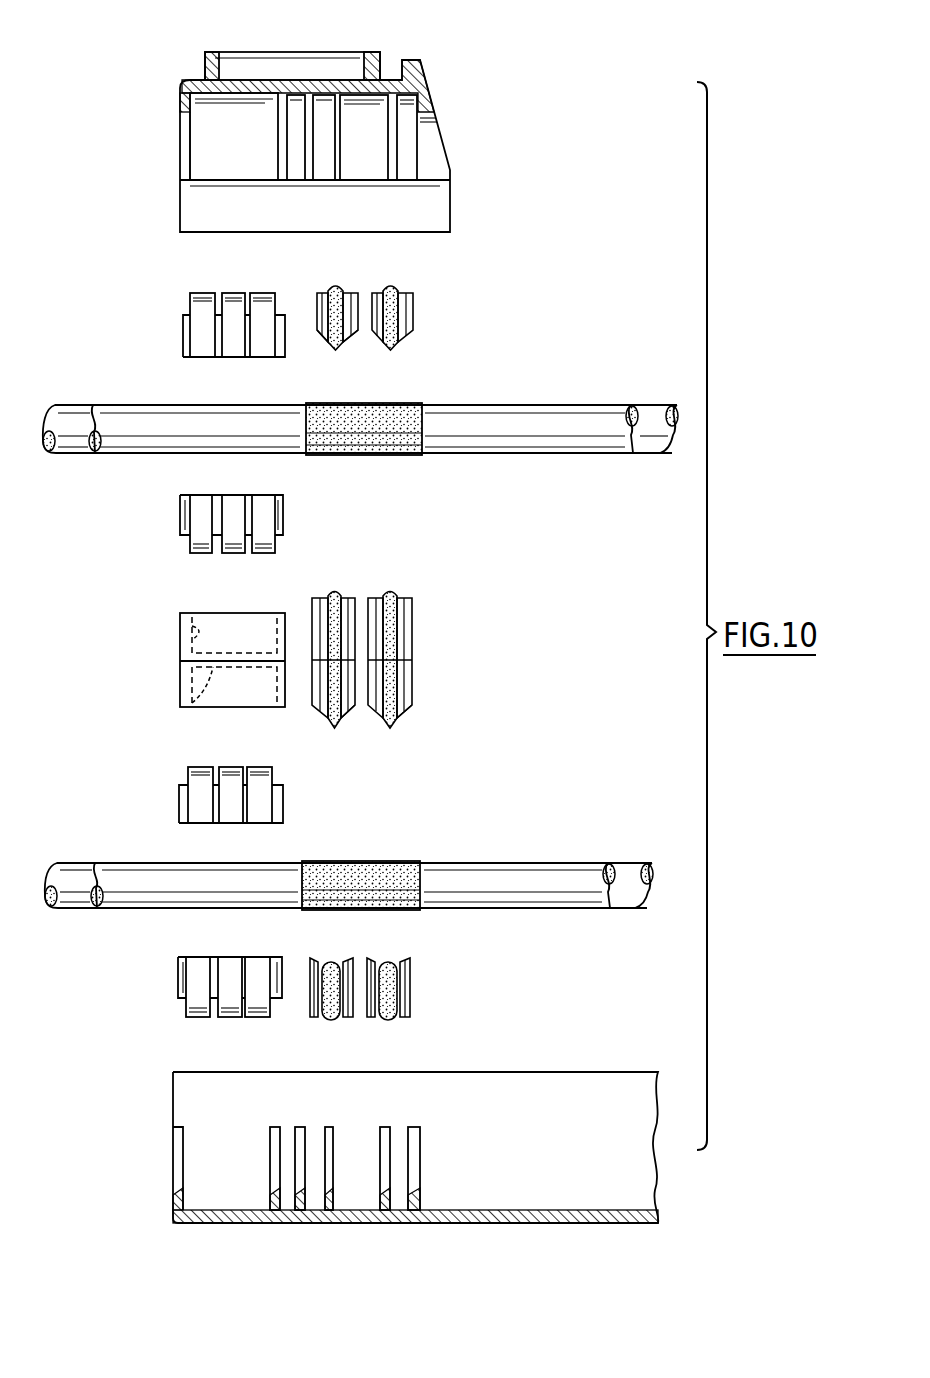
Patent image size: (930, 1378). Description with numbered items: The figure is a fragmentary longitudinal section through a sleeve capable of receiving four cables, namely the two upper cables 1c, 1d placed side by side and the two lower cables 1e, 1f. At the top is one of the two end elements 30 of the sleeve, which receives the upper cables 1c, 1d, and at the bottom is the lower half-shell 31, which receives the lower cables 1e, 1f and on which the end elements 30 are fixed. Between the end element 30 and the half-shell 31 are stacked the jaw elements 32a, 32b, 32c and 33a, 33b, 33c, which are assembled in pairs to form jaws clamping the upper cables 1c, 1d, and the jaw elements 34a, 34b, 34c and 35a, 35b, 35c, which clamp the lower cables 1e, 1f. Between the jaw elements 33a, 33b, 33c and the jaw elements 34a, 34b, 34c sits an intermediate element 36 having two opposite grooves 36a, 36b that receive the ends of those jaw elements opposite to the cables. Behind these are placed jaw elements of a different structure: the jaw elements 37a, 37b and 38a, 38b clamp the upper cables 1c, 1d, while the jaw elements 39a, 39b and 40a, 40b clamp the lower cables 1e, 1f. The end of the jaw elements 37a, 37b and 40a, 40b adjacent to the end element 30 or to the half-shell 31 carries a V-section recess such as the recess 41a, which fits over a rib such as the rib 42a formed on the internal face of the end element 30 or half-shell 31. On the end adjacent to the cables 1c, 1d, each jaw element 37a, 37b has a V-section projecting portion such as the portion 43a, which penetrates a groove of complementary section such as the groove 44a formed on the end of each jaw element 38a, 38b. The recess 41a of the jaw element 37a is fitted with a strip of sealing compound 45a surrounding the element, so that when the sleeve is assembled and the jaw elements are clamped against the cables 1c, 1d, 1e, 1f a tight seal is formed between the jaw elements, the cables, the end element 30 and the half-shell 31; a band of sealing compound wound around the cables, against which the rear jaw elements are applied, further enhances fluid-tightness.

The end element 30 is at (318, 42).
The rib 42a is at (341, 106).
The jaw element 32a is at (197, 292).
The jaw element 32b is at (233, 292).
The jaw element 32c is at (262, 292).
The jaw element 37a is at (350, 293).
The jaw element 37b is at (408, 293).
The V-section recess 41a is at (332, 289).
The V-section projecting portion 43a is at (326, 336).
The strip of sealing compound 45a is at (344, 345).
The cable 1c is at (75, 440).
The cable 1d is at (122, 428).
The jaw element 33a is at (200, 542).
The jaw element 33b is at (233, 542).
The jaw element 33c is at (265, 546).
The groove 44a is at (333, 596).
The jaw element 38a is at (355, 597).
The jaw element 38b is at (398, 596).
The jaw element 39a is at (350, 715).
The jaw element 39b is at (412, 707).
The intermediate element 36 is at (180, 665).
The groove 36a is at (192, 626).
The groove 36b is at (192, 703).
The jaw element 34a is at (195, 770).
The jaw element 34b is at (232, 767).
The jaw element 34c is at (262, 775).
The cable 1e is at (77, 893).
The cable 1f is at (125, 883).
The jaw element 35a is at (196, 1004).
The jaw element 35b is at (230, 1008).
The jaw element 35c is at (262, 1011).
The jaw element 40a is at (322, 962).
The jaw element 40b is at (379, 962).
The lower half-shell 31 is at (622, 1108).